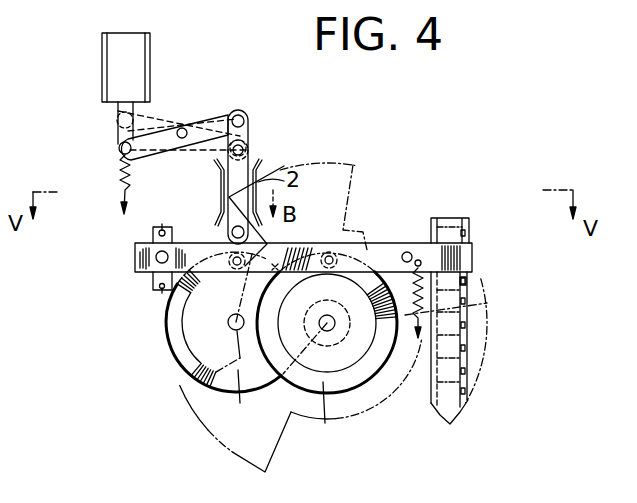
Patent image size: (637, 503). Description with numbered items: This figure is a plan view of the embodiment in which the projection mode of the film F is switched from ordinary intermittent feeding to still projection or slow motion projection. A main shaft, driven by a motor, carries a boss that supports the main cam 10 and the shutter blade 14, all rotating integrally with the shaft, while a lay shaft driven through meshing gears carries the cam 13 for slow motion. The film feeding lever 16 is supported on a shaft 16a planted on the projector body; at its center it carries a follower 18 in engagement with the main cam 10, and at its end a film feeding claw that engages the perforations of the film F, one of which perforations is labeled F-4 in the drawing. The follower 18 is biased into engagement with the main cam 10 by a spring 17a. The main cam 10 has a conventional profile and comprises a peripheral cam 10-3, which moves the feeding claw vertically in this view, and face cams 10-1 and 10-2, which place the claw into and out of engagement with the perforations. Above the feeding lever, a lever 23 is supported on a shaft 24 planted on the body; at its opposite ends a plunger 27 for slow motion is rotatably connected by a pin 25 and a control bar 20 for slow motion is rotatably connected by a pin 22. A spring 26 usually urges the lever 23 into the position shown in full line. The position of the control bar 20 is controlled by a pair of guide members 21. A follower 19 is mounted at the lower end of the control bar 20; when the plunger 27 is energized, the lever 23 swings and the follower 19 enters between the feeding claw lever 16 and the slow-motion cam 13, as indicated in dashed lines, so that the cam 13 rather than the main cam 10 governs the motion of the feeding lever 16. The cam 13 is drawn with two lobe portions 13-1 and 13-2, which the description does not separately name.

The plunger for slow motion 27 is at (108, 75).
The spring 26 is at (120, 176).
The pin 25 is at (118, 147).
The shaft 24 is at (182, 128).
The lever 23 is at (213, 120).
The pin 22 is at (239, 114).
The guide members 21 is at (219, 196).
The control bar for slow motion 20 is at (247, 170).
The follower 19 is at (231, 232).
The follower 18 is at (326, 248).
The spring 17a is at (419, 260).
The film feeding lever 16 is at (352, 246).
The shaft 16a is at (158, 255).
The shutter blade 14 is at (232, 452).
The cam for slow motion 13 is at (200, 337).
The wheel segment 13-1 is at (170, 311).
The wheel segment 13-2 is at (224, 399).
The main cam 10 is at (327, 338).
The face cam 10-1 is at (376, 286).
The face cam 10-2 is at (318, 434).
The peripheral cam 10-3 is at (380, 335).
The film F is at (471, 226).
The film perforation F-4 is at (468, 281).